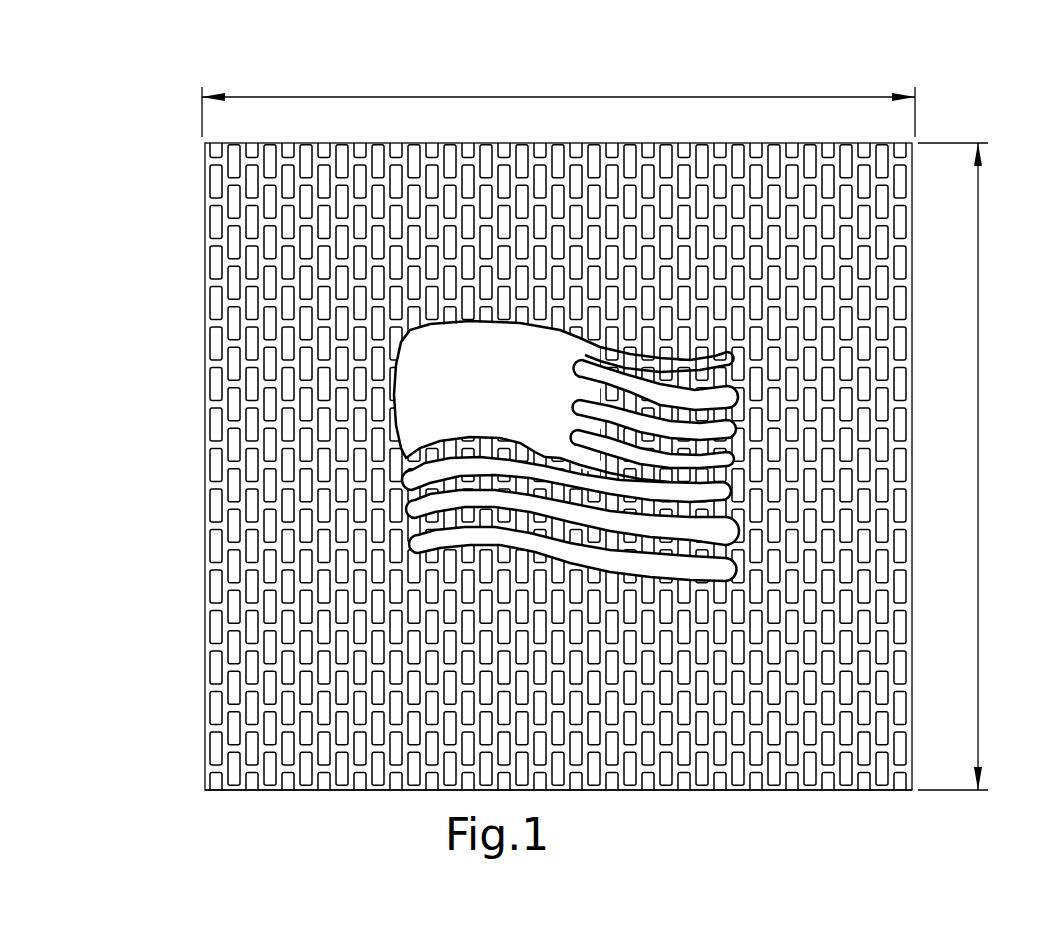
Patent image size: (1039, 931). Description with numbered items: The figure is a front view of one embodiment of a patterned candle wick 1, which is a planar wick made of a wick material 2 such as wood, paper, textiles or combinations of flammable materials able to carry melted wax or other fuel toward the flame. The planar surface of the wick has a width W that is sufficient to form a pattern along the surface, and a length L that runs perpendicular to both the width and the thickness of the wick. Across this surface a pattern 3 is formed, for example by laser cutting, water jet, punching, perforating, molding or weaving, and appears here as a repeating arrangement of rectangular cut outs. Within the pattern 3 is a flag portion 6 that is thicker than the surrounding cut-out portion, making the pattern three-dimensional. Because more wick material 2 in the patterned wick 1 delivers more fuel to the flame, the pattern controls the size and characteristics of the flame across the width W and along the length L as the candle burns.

The patterned candle wick 1 is at (776, 70).
The wick material 2 is at (262, 788).
The pattern 3 is at (417, 375).
The flag portion 6 is at (495, 395).
The width W is at (450, 97).
The length L is at (984, 394).